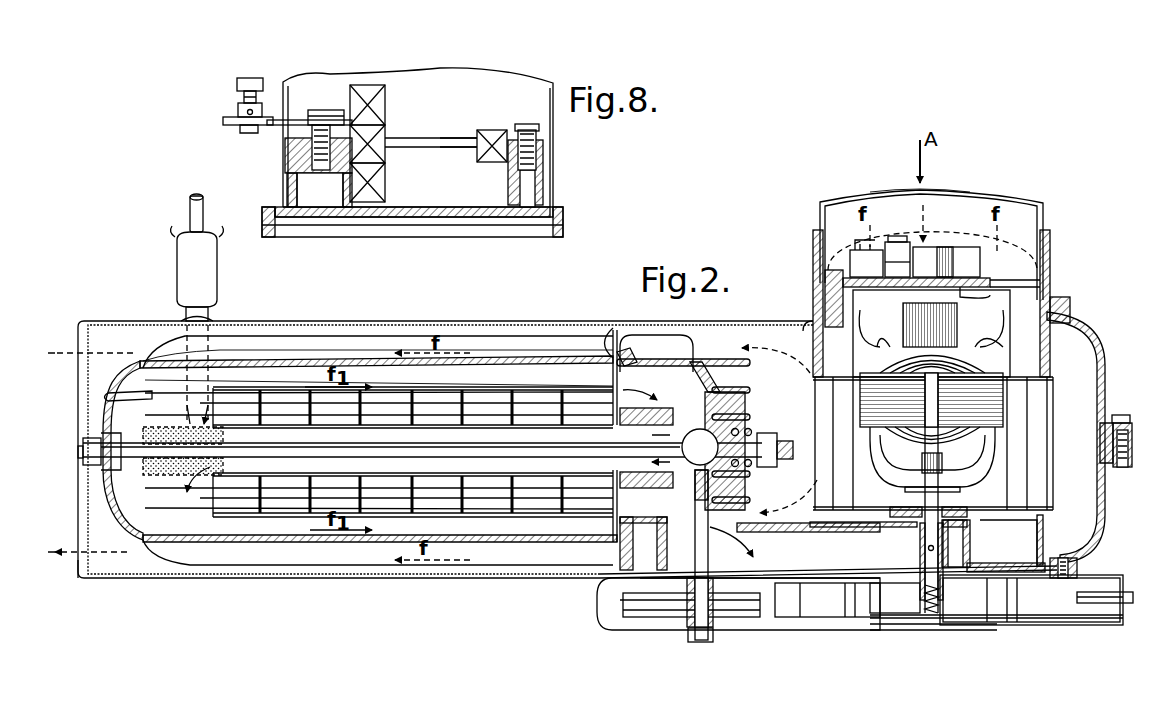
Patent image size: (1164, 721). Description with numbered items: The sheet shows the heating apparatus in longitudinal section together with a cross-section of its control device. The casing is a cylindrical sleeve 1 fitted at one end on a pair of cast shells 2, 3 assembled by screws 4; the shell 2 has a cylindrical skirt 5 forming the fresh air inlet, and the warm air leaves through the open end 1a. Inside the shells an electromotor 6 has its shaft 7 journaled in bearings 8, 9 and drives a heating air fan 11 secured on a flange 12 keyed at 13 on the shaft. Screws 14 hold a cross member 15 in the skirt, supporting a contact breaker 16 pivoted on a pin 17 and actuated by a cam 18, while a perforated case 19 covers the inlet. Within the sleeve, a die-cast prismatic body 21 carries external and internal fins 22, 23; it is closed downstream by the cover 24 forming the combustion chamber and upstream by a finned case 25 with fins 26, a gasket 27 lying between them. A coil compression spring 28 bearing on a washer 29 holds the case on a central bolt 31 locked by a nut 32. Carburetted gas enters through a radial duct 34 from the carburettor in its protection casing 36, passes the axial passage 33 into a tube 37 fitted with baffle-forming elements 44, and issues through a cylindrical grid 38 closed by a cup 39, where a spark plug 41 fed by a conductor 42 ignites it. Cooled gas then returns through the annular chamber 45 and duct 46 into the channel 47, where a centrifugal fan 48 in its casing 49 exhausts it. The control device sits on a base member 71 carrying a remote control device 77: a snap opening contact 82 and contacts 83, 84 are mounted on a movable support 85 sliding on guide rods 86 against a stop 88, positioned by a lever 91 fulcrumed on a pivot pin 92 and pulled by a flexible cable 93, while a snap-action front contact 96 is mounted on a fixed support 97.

In FIG. 2, the cylindrical sleeve 1 is at (335, 325).
In FIG. 2, the open end of casing 1a is at (82, 562).
In FIG. 2, the cast shell 2 is at (1110, 332).
In FIG. 2, the cast shell 3 is at (1103, 520).
In FIG. 2, the screws 4 is at (1120, 415).
In FIG. 2, the cylindrical skirt 5 is at (1050, 250).
In FIG. 2, the electromotor 6 is at (990, 410).
In FIG. 2, the motor shaft 7 is at (922, 463).
In FIG. 2, the bearing 8 is at (903, 320).
In FIG. 2, the bearing 9 is at (912, 545).
In FIG. 2, the heating air fan 11 is at (1030, 403).
In FIG. 2, the flange 12 is at (1005, 512).
In FIG. 2, the key 13 is at (965, 540).
In FIG. 2, the screws 14 is at (830, 272).
In FIG. 2, the cross member 15 is at (1000, 295).
In FIG. 2, the contact breaker 16 is at (897, 242).
In FIG. 2, the pivot pin 17 is at (912, 200).
In FIG. 2, the cam 18 is at (945, 247).
In FIG. 2, the perforated case 19 is at (1043, 215).
In FIG. 2, the prismatic body 21 is at (478, 575).
In FIG. 2, the external fins 22 is at (375, 333).
In FIG. 2, the internal fins 23 is at (470, 320).
In FIG. 2, the cover 24 is at (143, 540).
In FIG. 2, the case 25 is at (673, 383).
In FIG. 2, the external fins 26 is at (700, 342).
In FIG. 2, the gasket 27 is at (597, 600).
In FIG. 2, the coil compression spring 28 is at (780, 418).
In FIG. 2, the washer 29 is at (775, 478).
In FIG. 2, the central bolt 31 is at (550, 452).
In FIG. 2, the nut 32 is at (105, 500).
In FIG. 2, the axial passage 33 is at (742, 432).
In FIG. 2, the radial duct 34 is at (683, 420).
In FIG. 8, the protection casing 36 is at (553, 147).
In FIG. 2, the tube 37 is at (295, 388).
In FIG. 2, the cylindrical grid 38 is at (222, 500).
In FIG. 2, the transverse cup 39 is at (118, 392).
In FIG. 2, the spark plug 41 is at (245, 380).
In FIG. 2, the conductor 42 is at (190, 208).
In FIG. 2, the baffle-forming elements 44 is at (467, 407).
In FIG. 2, the annular chamber 45 is at (622, 350).
In FIG. 2, the duct 46 is at (675, 520).
In FIG. 2, the channel 47 is at (790, 550).
In FIG. 2, the centrifugal fan 48 is at (1030, 598).
In FIG. 2, the fan casing 49 is at (1000, 628).
In FIG. 8, the base member 71 is at (445, 217).
In FIG. 8, the remote control device 77 is at (233, 108).
In FIG. 8, the snap opening contact 82 is at (385, 140).
In FIG. 8, the contact 83 is at (385, 100).
In FIG. 8, the contact 84 is at (385, 170).
In FIG. 8, the movable support 85 is at (395, 217).
In FIG. 8, the guide rods 86 is at (457, 147).
In FIG. 8, the stop 88 is at (300, 160).
In FIG. 8, the lever 91 is at (297, 120).
In FIG. 8, the pivot pin 92 is at (330, 125).
In FIG. 8, the flexible cable 93 is at (250, 125).
In FIG. 8, the snap-action front contact 96 is at (492, 132).
In FIG. 8, the fixed support 97 is at (543, 180).